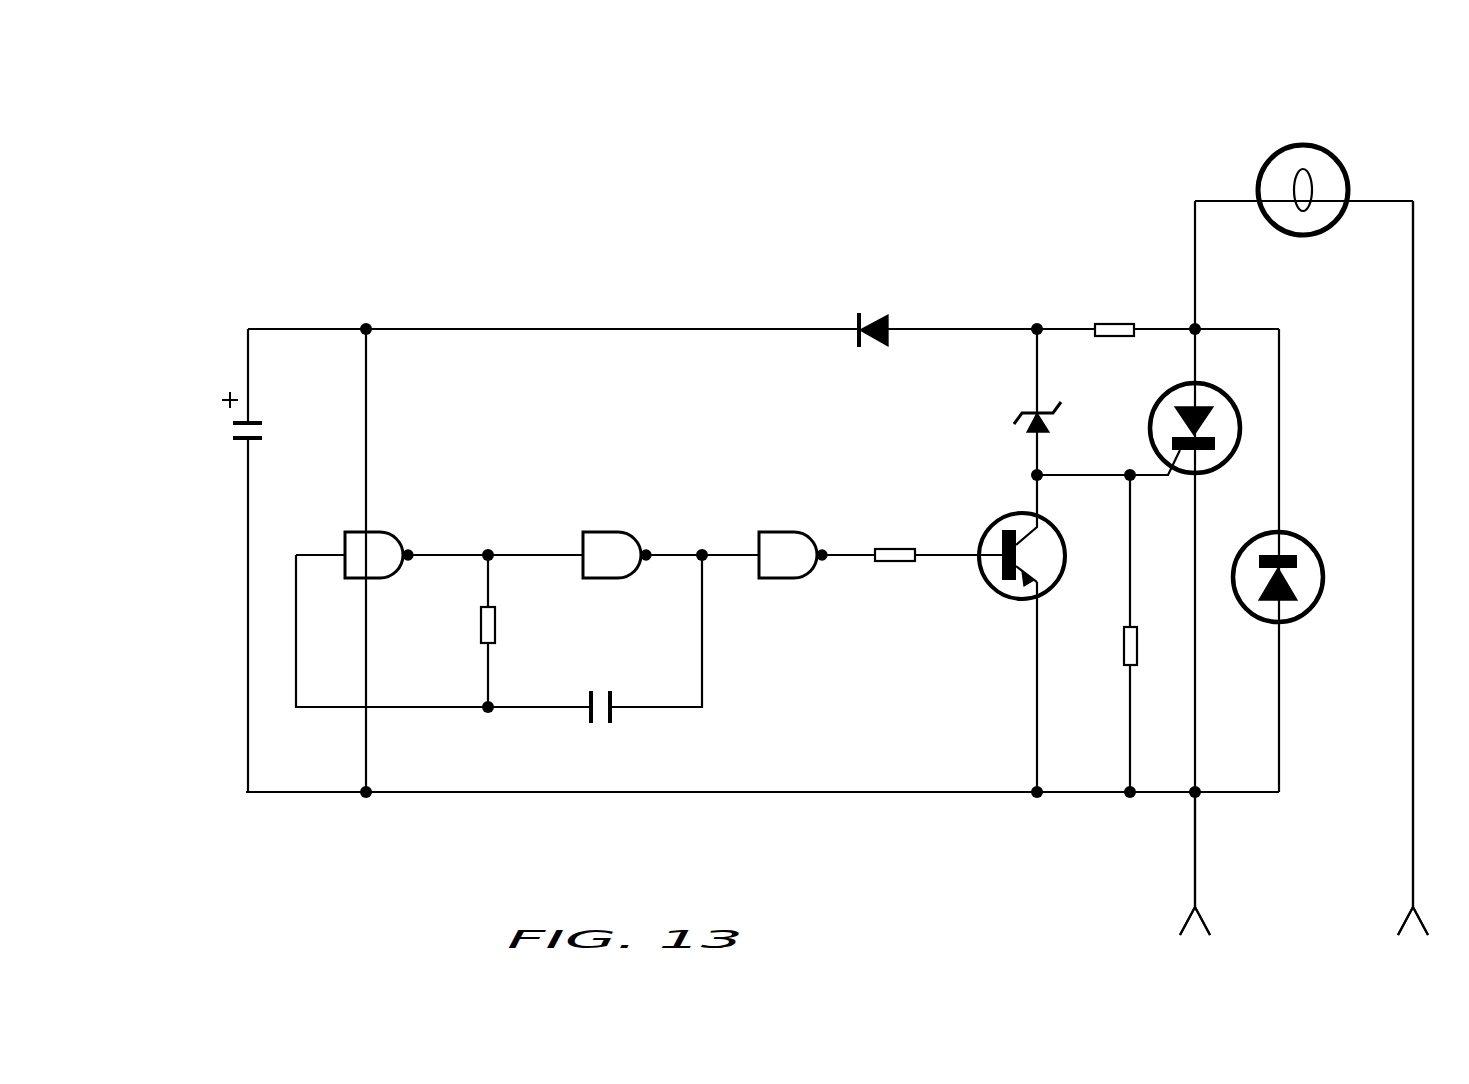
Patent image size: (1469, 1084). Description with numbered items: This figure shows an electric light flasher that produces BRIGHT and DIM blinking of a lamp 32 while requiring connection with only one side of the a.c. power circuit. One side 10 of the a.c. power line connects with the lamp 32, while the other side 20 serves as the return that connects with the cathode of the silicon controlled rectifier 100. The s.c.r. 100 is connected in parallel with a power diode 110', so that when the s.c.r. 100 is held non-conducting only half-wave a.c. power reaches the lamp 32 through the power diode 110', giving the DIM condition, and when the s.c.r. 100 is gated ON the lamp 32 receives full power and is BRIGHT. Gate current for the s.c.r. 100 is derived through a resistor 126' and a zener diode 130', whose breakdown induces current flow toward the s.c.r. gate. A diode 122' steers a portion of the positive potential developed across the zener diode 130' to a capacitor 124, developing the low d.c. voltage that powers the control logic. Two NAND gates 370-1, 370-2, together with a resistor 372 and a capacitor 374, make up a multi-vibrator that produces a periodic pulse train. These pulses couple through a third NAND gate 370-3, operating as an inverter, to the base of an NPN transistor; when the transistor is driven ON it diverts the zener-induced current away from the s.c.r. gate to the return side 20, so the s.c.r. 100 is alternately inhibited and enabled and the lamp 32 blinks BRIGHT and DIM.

The capacitor 124 is at (268, 427).
The NAND gate 370-1 is at (398, 532).
The NAND gate 370-2 is at (628, 533).
The NAND gate 370-3 is at (812, 533).
The resistor 372 is at (480, 636).
The capacitor 374 is at (618, 690).
The diode 122' is at (909, 306).
The zener diode 130' is at (1005, 401).
The resistor 126' is at (1133, 302).
The silicon controlled rectifier 100 is at (1152, 410).
The lamp 32 is at (1347, 170).
The power diode 110' is at (1310, 567).
The other side of the a.c. power line 20 is at (1197, 877).
The one side of the a.c. power line 10 is at (1413, 852).